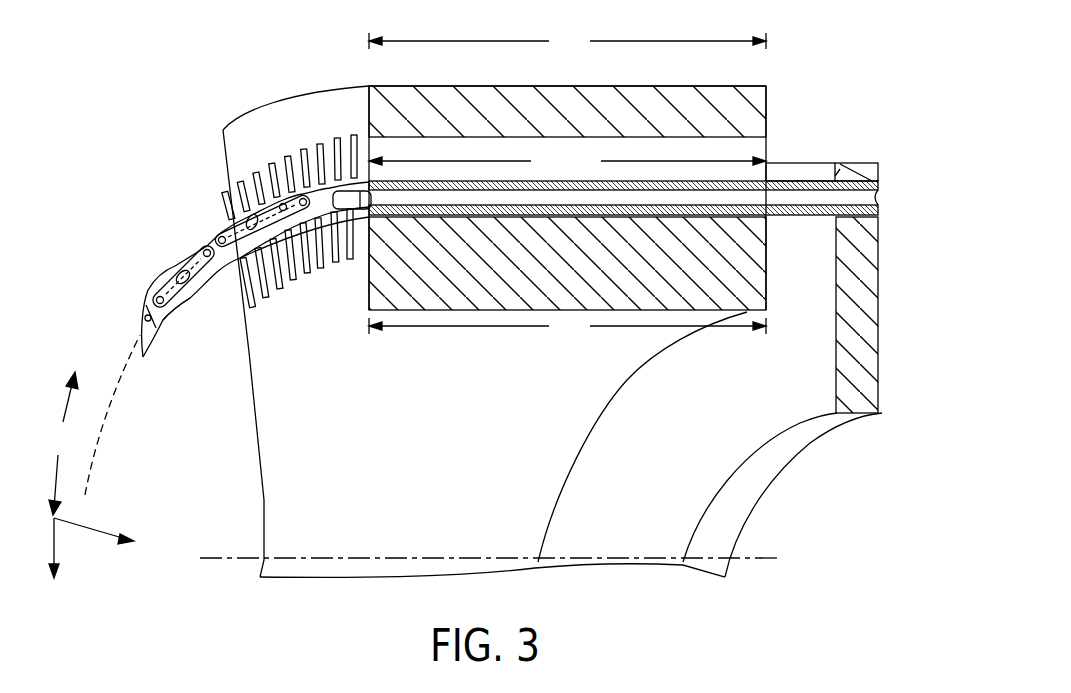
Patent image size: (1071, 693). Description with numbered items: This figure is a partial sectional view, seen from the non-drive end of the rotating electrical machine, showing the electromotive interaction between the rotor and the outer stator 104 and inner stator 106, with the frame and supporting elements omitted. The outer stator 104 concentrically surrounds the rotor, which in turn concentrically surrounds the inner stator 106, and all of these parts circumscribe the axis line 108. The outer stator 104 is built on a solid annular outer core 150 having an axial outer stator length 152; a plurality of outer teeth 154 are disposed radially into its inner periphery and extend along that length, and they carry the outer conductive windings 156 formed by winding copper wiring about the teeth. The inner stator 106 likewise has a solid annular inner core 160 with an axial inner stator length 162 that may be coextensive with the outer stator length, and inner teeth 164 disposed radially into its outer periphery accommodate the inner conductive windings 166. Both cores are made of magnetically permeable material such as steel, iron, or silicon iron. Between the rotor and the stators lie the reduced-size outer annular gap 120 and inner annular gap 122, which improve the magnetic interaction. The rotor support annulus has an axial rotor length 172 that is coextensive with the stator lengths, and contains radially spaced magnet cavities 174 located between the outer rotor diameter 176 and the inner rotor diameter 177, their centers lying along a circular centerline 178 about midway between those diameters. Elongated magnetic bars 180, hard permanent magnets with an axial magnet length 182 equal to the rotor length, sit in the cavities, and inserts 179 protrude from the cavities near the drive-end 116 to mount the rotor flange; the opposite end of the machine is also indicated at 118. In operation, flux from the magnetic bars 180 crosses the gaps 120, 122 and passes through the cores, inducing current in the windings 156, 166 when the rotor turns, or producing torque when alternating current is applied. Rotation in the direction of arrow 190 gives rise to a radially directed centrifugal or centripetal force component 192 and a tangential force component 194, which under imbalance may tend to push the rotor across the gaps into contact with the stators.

The outer stator 104 is at (753, 110).
The inner stator 106 is at (750, 247).
The axis line 108 is at (752, 560).
The drive-end 116 is at (936, 115).
The forward side 118 is at (101, 138).
The outer annular gap 120 is at (742, 183).
The inner annular gap 122 is at (767, 222).
The annular outer core 150 is at (613, 82).
The axial outer stator length 152 is at (567, 41).
The outer teeth 154 is at (279, 150).
The outer conductive windings 156 is at (337, 186).
The annular inner core 160 is at (648, 342).
The axial inner stator length 162 is at (567, 325).
The inner teeth 164 is at (253, 353).
The inner conductive windings 166 is at (297, 265).
The axial rotor length 172 is at (567, 159).
The axial magnet length 182 is at (567, 159).
The magnet cavities 174 is at (164, 285).
The outer rotor diameter 176 is at (192, 308).
The inner rotor diameter 177 is at (184, 240).
The circular centerline 178 is at (108, 462).
The inserts 179 is at (802, 183).
The magnetic bars 180 is at (331, 187).
The rotation direction 190 is at (62, 443).
The centrifugal or centripetal force component 192 is at (110, 541).
The tangential force component 194 is at (56, 565).